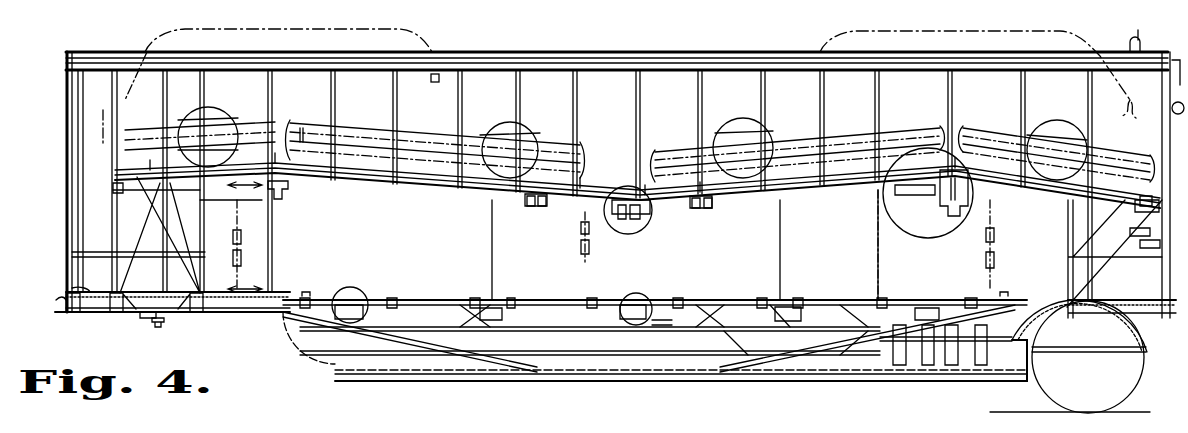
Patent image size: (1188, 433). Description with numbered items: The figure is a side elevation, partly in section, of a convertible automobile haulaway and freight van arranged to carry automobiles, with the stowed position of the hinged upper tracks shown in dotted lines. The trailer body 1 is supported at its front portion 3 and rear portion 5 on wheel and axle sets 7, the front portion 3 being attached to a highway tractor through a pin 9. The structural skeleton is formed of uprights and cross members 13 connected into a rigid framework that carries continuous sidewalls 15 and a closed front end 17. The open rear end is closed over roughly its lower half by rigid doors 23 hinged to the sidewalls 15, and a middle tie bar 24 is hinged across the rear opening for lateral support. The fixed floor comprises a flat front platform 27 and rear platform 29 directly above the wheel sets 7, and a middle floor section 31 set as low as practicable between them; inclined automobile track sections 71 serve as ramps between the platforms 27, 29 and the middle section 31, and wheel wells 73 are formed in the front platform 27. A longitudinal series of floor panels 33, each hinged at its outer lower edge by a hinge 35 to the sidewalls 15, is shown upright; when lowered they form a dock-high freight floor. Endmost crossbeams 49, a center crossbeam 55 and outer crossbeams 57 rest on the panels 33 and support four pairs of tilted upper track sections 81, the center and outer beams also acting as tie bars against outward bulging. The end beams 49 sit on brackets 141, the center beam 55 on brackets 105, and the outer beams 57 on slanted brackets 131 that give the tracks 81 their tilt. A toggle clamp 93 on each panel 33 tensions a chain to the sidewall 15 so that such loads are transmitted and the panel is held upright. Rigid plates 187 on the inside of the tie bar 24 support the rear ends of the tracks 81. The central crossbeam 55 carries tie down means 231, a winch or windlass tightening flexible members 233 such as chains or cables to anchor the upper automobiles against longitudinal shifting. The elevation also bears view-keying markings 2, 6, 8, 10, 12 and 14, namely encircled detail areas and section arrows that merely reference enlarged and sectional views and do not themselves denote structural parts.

The trailer body 1 is at (60, 188).
The lower deck 2 is at (895, 306).
The front portion 3 is at (255, 313).
The rear portion 5 is at (1140, 378).
The deck hinge detail 6 is at (945, 228).
The wheel and axle sets 7 is at (880, 132).
The deck support detail 8 is at (640, 232).
The pin 9 is at (160, 320).
The lower deck clamp 10 is at (360, 290).
The lower deck clamp 12 is at (640, 296).
The uprights and cross members 13 is at (205, 99).
The section line 14 is at (234, 241).
The sidewalls 15 is at (560, 106).
The front end 17 is at (66, 150).
The rigid doors 23 is at (1165, 248).
The middle tie bar 24 is at (1165, 198).
The front platform 27 is at (70, 290).
The rear platform 29 is at (1125, 300).
The middle floor section 31 is at (640, 378).
The floor panels 33 is at (456, 234).
The hinge 35 is at (340, 296).
The endmost crossbeams 49 is at (301, 128).
The center crossbeam 55 is at (640, 222).
The outer crossbeams 57 is at (545, 212).
The automobile track sections 71 is at (303, 296).
The wheel wells 73 is at (138, 320).
The upper track sections 81 is at (150, 106).
The toggle clamp 93 is at (244, 240).
The brackets 105 is at (622, 216).
The brackets 131 is at (534, 206).
The brackets 141 is at (300, 197).
The rigid plates 187 is at (1160, 222).
The tie down means 231 is at (118, 188).
The flexible members 233 is at (200, 128).